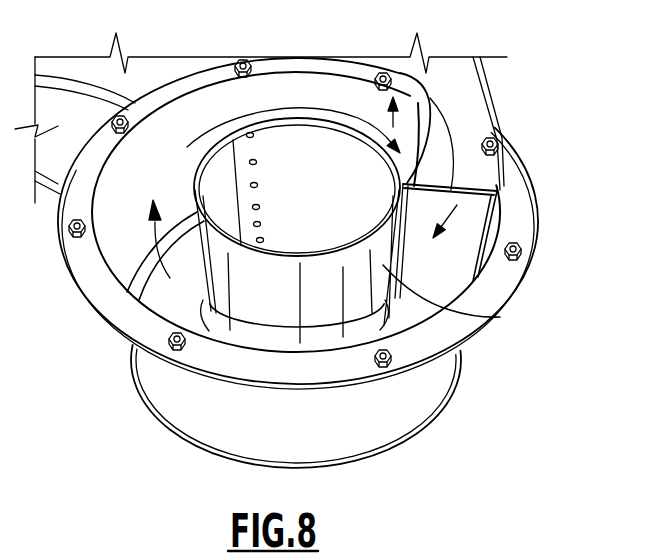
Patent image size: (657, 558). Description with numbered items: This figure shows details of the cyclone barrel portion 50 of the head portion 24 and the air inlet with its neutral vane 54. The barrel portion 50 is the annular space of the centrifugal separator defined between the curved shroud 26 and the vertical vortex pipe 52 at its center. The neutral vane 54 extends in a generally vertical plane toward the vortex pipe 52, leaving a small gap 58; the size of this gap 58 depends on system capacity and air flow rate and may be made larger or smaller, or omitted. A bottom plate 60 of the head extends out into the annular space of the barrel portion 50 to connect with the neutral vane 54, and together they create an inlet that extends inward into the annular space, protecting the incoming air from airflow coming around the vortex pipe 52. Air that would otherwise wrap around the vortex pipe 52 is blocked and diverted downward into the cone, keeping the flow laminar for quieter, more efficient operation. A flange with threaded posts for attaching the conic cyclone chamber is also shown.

The head portion 24 is at (525, 78).
The shroud 26 is at (412, 399).
The cyclone barrel portion 50 is at (118, 252).
The vortex pipe 52 is at (261, 333).
The neutral vane 54 is at (417, 205).
The gap 58 is at (500, 317).
The bottom plate 60 is at (467, 123).